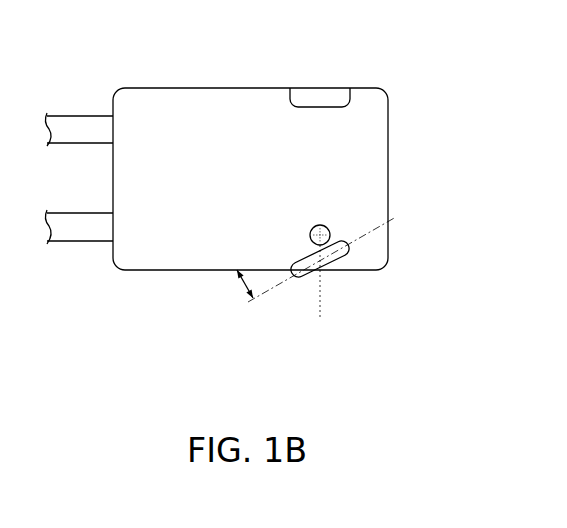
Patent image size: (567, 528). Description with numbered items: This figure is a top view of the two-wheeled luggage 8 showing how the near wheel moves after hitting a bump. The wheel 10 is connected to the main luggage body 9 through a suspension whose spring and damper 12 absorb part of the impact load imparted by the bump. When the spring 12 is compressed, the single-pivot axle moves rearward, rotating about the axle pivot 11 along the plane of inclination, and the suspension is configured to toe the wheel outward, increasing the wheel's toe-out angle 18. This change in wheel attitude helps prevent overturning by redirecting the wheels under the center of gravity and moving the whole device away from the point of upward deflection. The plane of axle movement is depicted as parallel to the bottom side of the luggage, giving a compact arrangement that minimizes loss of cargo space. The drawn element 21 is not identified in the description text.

The heat exchanger assembly 8 is at (163, 57).
The housing 9 is at (200, 88).
The outlet slot 10 is at (333, 271).
The pivot axis 11 is at (321, 224).
The reference line 12 is at (30, 335).
The offset distance 18 is at (242, 285).
The connecting pipe 21 is at (90, 241).